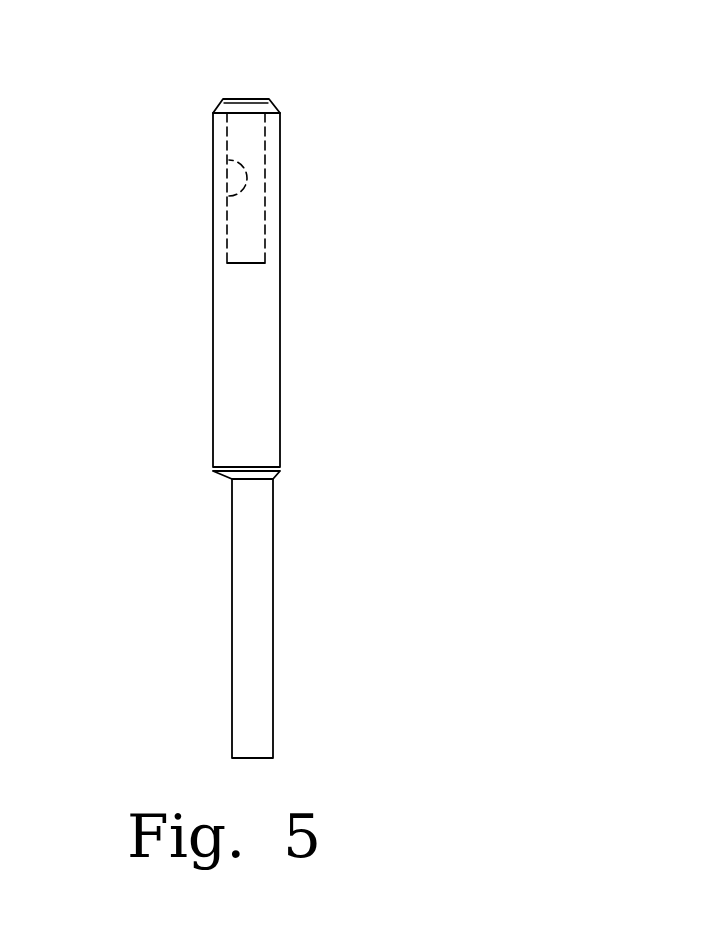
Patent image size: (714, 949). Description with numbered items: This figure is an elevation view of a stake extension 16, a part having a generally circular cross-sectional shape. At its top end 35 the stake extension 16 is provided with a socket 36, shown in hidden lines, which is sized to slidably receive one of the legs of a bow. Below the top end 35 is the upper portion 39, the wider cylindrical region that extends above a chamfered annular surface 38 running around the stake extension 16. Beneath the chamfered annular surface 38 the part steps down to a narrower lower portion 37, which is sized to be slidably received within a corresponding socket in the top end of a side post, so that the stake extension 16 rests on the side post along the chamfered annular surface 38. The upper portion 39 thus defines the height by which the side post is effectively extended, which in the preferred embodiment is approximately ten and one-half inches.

The stake extension 16 is at (217, 384).
The top end 35 is at (245, 97).
The socket 36 is at (229, 196).
The lower portion 37 is at (250, 615).
The chamfered annular surface 38 is at (275, 473).
The upper portion 39 is at (250, 329).